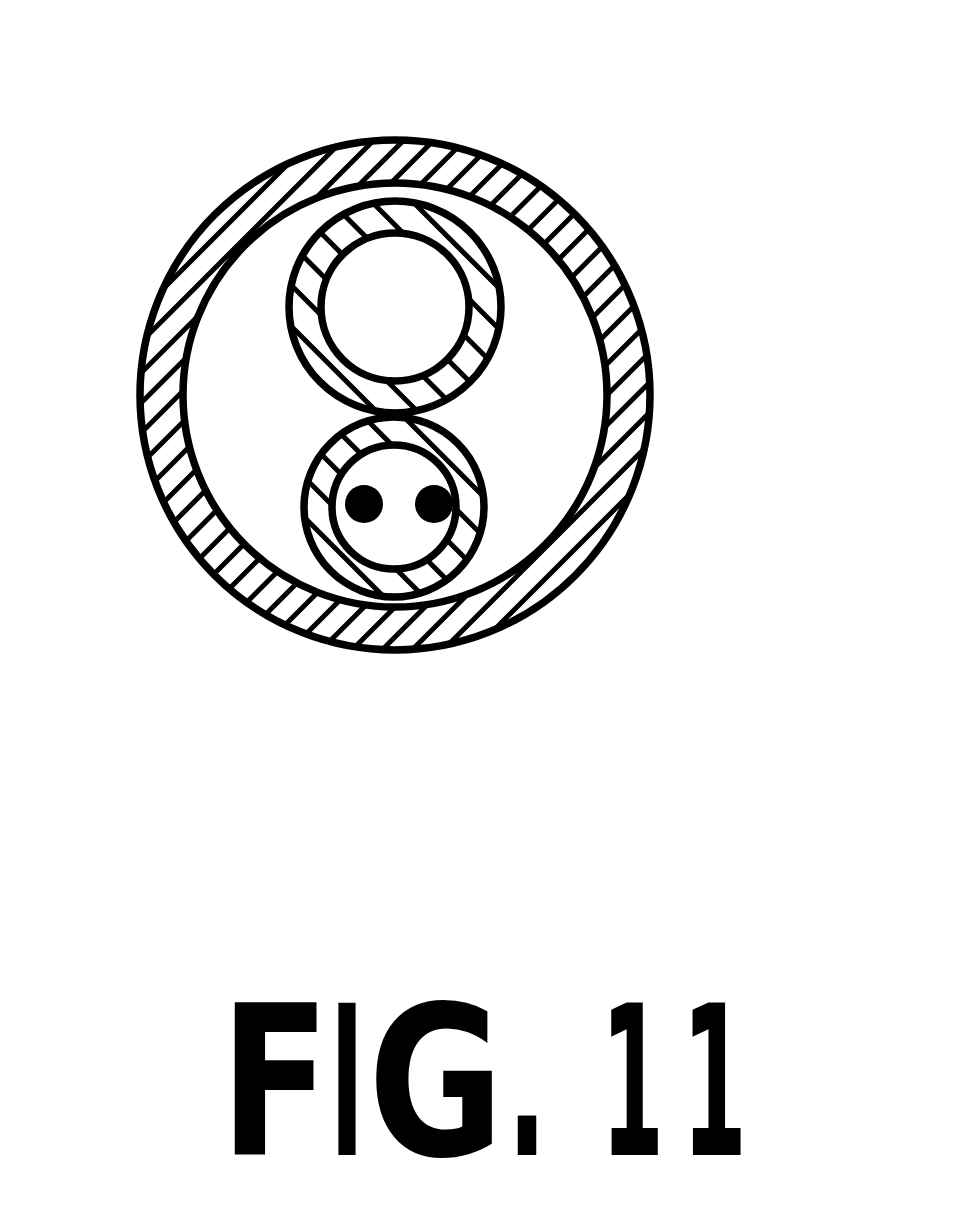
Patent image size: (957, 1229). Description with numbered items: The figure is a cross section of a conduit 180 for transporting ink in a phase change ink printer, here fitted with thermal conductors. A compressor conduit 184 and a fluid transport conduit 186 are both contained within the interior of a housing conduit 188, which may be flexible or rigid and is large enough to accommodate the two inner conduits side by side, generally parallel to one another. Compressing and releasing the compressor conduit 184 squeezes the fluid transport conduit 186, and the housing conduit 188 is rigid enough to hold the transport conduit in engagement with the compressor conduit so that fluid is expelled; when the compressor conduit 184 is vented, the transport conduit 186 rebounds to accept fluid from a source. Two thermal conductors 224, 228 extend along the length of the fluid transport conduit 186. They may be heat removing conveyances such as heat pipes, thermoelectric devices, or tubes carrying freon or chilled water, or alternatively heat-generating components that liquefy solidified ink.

The conduit 180 is at (677, 139).
The compressor conduit 184 is at (503, 328).
The fluid transport conduit 186 is at (483, 490).
The housing conduit 188 is at (395, 650).
The thermal conductor 224 is at (363, 504).
The thermal conductor 228 is at (435, 504).